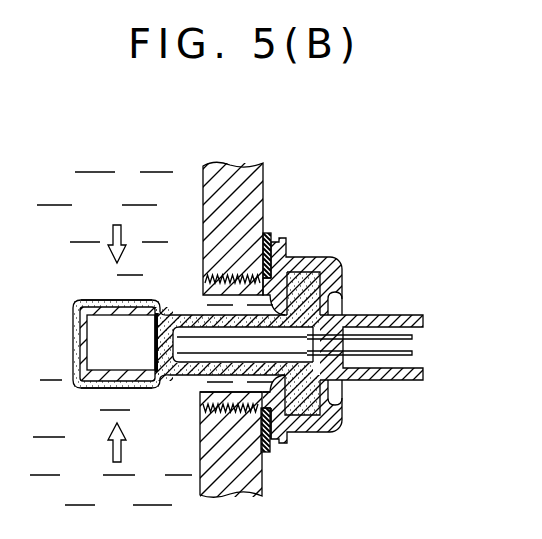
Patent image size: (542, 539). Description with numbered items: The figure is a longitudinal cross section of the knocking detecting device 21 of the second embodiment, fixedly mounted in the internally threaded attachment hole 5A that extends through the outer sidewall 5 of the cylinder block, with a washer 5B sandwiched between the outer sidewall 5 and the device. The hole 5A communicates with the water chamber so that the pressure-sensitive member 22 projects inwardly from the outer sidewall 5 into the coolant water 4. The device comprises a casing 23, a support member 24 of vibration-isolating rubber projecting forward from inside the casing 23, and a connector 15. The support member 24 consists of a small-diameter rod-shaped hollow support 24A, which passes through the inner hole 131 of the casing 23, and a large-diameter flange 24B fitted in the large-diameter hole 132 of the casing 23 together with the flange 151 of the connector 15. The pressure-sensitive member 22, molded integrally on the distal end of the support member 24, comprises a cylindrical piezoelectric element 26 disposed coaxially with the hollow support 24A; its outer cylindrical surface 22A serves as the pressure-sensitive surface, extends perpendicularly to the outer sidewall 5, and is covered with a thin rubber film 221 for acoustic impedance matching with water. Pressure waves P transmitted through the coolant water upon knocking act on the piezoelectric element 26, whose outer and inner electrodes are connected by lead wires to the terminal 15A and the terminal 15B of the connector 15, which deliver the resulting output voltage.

The water chamber 4 is at (80, 197).
The pressure waves P is at (113, 230).
The outer sidewall 5 is at (231, 176).
The internally threaded hole 5A is at (196, 302).
The washer 5B is at (268, 232).
The knocking detecting device 21 is at (352, 232).
The flange 151 is at (320, 292).
The casing 23 is at (307, 258).
The large-diameter flange 24B is at (317, 414).
The support member 24 is at (194, 314).
The rod-shaped hollow support 24A is at (184, 379).
The pressure-sensitive member 22 is at (73, 308).
The outer cylindrical surface 22A is at (92, 300).
The thin film 221 is at (110, 390).
The cylindrical piezoelectric element 26 is at (120, 318).
The inner hole 131 is at (200, 397).
The large-diameter hole 132 is at (296, 420).
The connector 15 is at (386, 316).
The terminal 15A is at (412, 338).
The terminal 15B is at (413, 354).